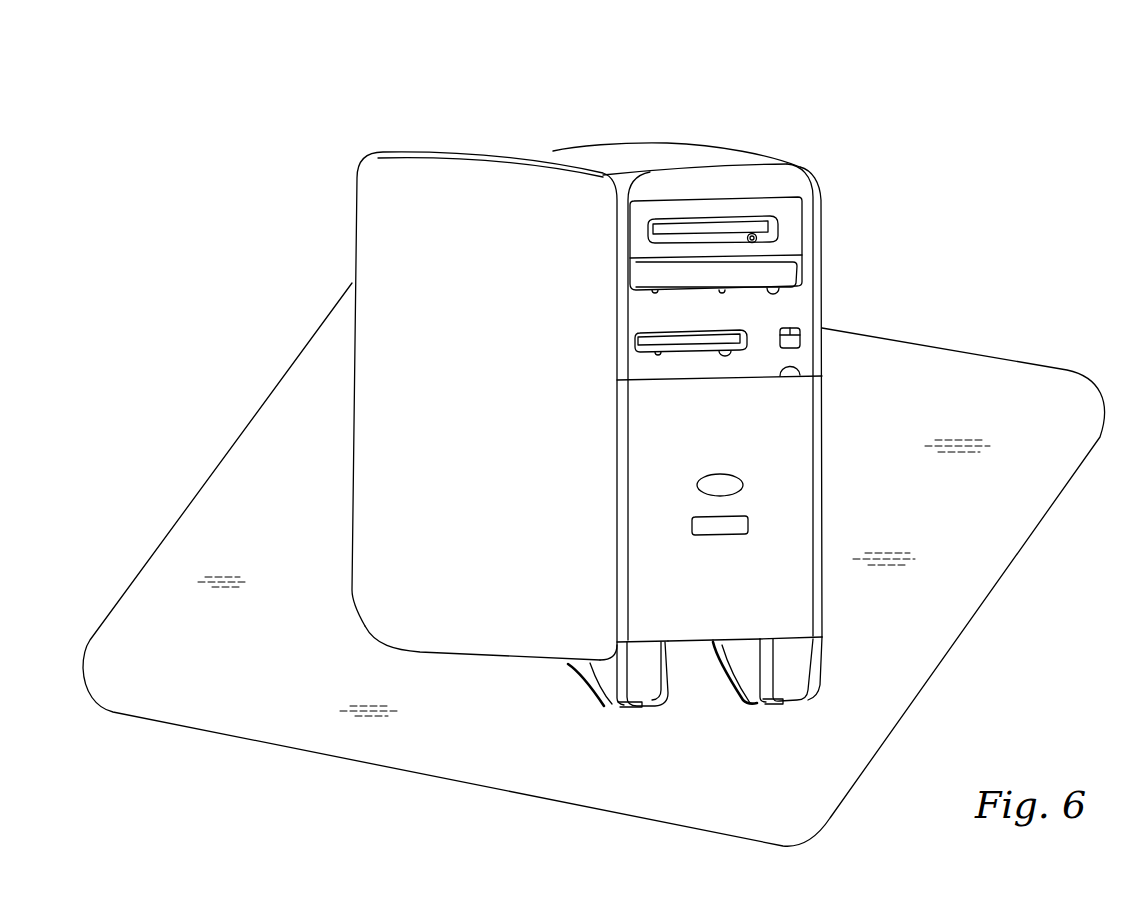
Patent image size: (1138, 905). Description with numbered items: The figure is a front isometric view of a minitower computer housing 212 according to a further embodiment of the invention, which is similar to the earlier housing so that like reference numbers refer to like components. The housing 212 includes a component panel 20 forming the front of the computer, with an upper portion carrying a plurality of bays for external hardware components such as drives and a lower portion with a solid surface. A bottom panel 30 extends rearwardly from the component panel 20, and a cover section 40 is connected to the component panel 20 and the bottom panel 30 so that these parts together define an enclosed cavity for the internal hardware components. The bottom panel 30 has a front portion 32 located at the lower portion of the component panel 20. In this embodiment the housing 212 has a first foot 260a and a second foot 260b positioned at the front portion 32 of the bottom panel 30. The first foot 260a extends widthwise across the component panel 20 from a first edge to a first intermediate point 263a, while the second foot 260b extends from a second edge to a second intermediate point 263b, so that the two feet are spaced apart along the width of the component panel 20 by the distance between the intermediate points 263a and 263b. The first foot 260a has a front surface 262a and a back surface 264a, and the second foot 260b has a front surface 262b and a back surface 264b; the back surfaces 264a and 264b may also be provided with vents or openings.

The computer housing 212 is at (617, 78).
The cover section 40 is at (334, 396).
The component panel 20 is at (792, 402).
The bottom panel 30 is at (483, 661).
The front portion 32 is at (557, 663).
The first intermediate point 263a is at (674, 628).
The second intermediate point 263b is at (762, 627).
The front surface 262a is at (641, 683).
The front surface 262b is at (787, 672).
The back surface 264a is at (587, 683).
The back surface 264b is at (735, 700).
The first foot 260a is at (639, 720).
The second foot 260b is at (785, 719).